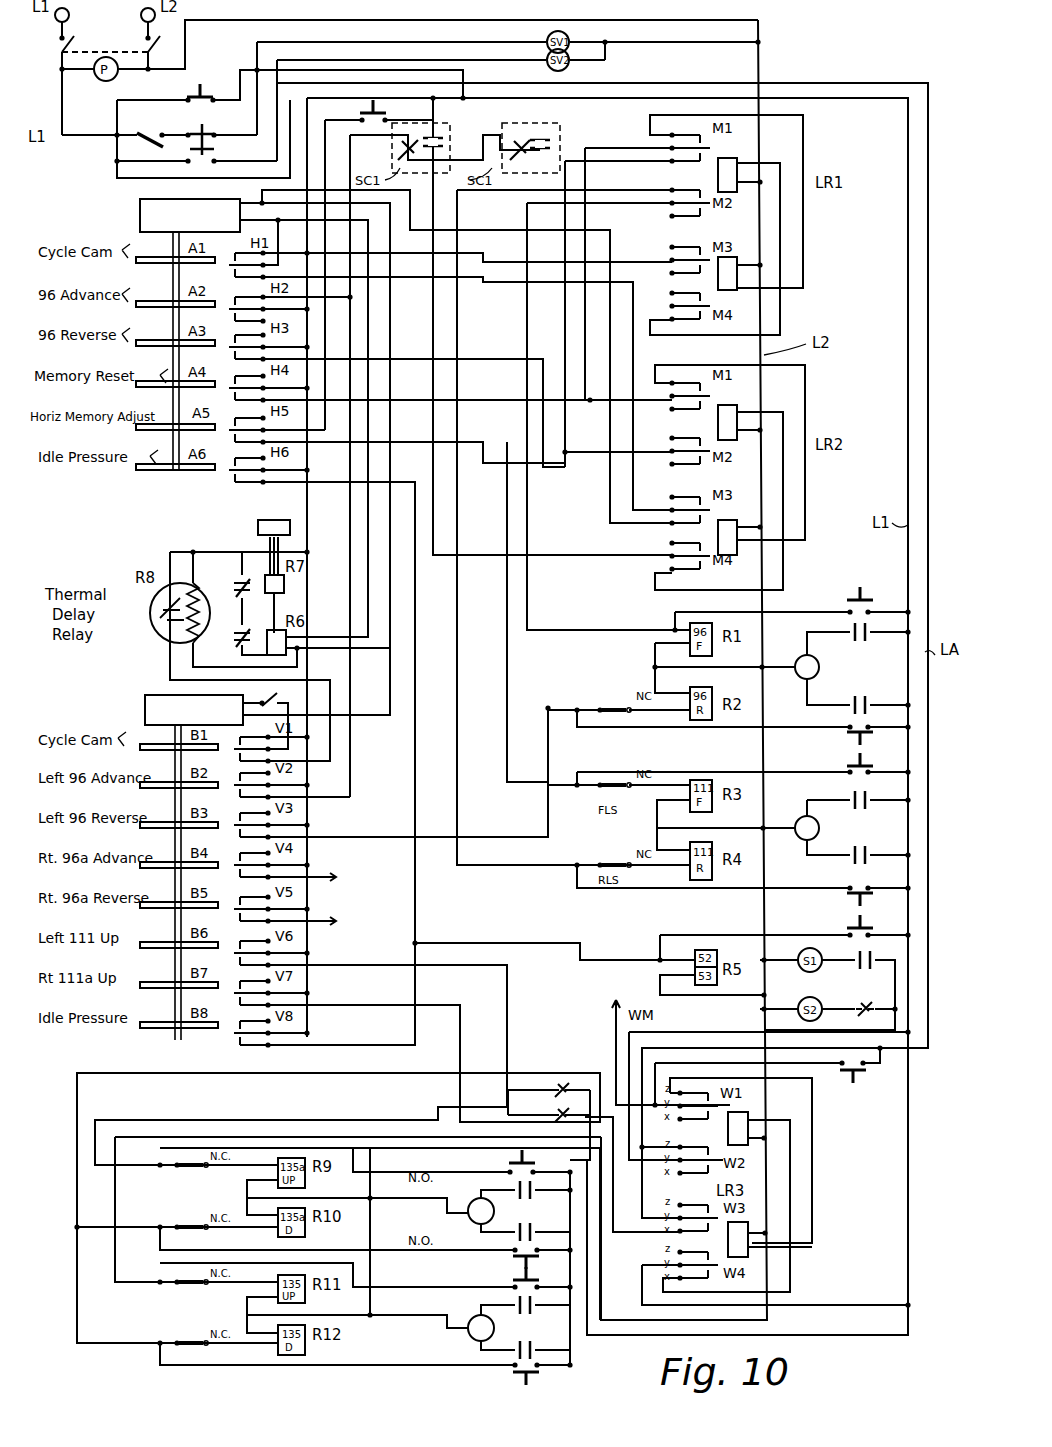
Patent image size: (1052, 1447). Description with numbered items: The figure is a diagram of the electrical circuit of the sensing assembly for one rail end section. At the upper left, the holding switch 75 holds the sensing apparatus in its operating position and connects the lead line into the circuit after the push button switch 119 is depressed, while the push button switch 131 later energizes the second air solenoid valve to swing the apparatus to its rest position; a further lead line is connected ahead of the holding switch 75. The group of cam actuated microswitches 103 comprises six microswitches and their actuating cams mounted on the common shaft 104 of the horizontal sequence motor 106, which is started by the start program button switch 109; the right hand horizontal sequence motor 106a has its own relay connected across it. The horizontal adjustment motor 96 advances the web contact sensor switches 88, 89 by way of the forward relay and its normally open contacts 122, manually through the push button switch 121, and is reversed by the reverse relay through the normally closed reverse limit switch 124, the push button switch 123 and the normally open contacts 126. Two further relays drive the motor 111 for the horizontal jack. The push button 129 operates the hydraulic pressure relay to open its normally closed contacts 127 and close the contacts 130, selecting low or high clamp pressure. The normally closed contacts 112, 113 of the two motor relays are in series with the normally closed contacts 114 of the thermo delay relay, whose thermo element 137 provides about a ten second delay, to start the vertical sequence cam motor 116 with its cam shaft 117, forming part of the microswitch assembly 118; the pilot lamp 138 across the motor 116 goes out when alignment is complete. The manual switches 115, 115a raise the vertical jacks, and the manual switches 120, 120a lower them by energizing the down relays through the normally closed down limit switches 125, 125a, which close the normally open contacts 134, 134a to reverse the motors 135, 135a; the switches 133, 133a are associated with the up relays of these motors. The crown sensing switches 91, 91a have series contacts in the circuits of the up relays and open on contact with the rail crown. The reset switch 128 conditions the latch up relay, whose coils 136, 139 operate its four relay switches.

The holding switch 75 is at (160, 128).
The web contact sensor switch 88 is at (462, 130).
The web contact sensor switch 89 is at (580, 132).
The crown sensing switch 91 is at (570, 1105).
The crown sensing switch 91a is at (555, 1082).
The horizontal adjustment motor 96 is at (807, 667).
The group of cam actuated microswitches 103 is at (108, 181).
The cam shaft 104 is at (172, 468).
The horizontal sequence motor 106 is at (198, 196).
The horizontal sequence motor 106a is at (262, 518).
The start program button switch 109 is at (362, 112).
The motor 111 is at (807, 828).
The normally closed contacts 112 is at (252, 625).
The normally closed contacts 113 is at (240, 578).
The normally closed contacts of thermo delay relay 114 is at (152, 630).
The manual switch 115 is at (510, 1160).
The manual switch 115a is at (515, 1280).
The vertical sequence cam motor 116 is at (165, 694).
The cam shaft 117 is at (172, 742).
The microswitch assembly 118 is at (136, 698).
The push button switch 119 is at (205, 84).
The manual switch 120 is at (515, 1262).
The manual switch 120a is at (535, 1380).
The push button switch 121 is at (855, 588).
The normally open contacts 122 is at (862, 645).
The push button switch 123 is at (848, 740).
The normally closed reverse limit switch 124 is at (615, 682).
The normally closed down limit switch 125 is at (200, 1222).
The normally closed down limit switch 125a is at (200, 1338).
The normally open contacts 126 is at (862, 695).
The normally closed contacts 127 is at (860, 1018).
The reset switch 128 is at (870, 1070).
The push button 129 is at (850, 920).
The contacts 130 is at (866, 972).
The push button switch 131 is at (217, 152).
The normally closed limit switch 133 is at (197, 1170).
The normally closed limit switch 133a is at (197, 1287).
The normally open contacts 134 is at (535, 1208).
The normally open contacts 134a is at (534, 1326).
The motor 135 is at (481, 1328).
The motor 135a is at (481, 1211).
The coil of latch up relay 136 is at (748, 1118).
The thermo element 137 is at (193, 551).
The pilot lamp 138 is at (278, 682).
The coil of latch up relay 139 is at (748, 1252).